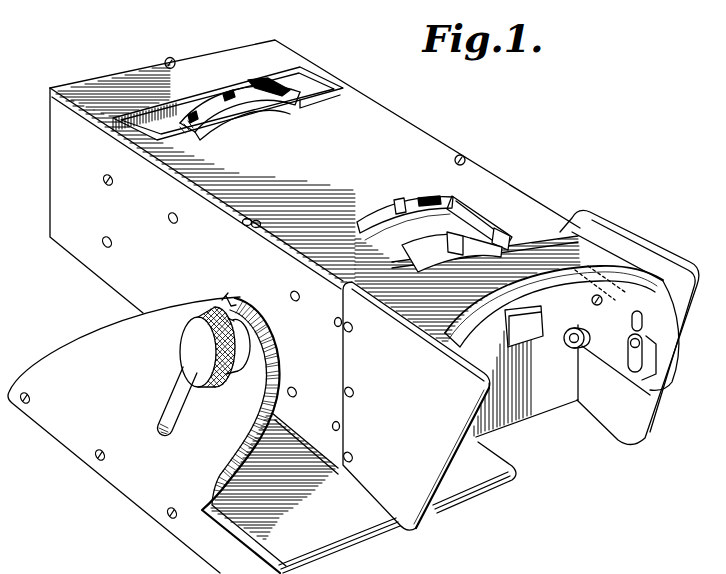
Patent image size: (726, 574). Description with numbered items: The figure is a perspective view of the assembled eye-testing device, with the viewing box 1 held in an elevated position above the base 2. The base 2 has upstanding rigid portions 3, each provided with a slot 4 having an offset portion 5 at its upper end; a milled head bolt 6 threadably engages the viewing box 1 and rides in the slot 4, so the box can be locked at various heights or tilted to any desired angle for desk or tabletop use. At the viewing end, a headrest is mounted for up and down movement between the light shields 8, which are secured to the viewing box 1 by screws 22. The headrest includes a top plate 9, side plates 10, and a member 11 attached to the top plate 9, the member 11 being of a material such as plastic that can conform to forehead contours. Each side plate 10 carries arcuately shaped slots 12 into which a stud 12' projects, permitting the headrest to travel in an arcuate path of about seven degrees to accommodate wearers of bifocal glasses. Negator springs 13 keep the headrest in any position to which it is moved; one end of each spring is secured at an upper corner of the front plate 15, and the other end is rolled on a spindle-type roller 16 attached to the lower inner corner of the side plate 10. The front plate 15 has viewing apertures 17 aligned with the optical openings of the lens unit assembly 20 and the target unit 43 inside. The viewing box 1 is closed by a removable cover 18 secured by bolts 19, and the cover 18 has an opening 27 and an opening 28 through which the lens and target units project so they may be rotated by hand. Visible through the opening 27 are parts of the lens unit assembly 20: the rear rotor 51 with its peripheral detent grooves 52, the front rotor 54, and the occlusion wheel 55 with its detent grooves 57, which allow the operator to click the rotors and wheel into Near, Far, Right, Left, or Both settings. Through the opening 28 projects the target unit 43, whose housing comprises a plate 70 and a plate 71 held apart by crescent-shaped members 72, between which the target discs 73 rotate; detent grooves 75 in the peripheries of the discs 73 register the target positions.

The viewing box 1 is at (42, 186).
The base 2 is at (246, 540).
The upstanding rigid portions 3 is at (120, 338).
The slot 4 is at (187, 380).
The offset portion 5 is at (208, 303).
The milled head bolt 6 is at (190, 336).
The light shields 8 is at (440, 512).
The top plate 9 is at (612, 248).
The side plates 10 is at (662, 362).
The member 11 is at (652, 280).
The arcuately shaped slots 12 is at (671, 362).
The stud 12' is at (620, 376).
The Negator springs 13 is at (570, 347).
The front plate 15 is at (533, 410).
The spindle-type roller 16 is at (526, 374).
The viewing apertures 17 is at (530, 318).
The removable cover 18 is at (417, 143).
The bolts 19 is at (165, 62).
The lens unit assembly 20 is at (403, 241).
The screws 22 is at (351, 333).
The opening 27 is at (482, 215).
The opening 28 is at (345, 86).
The target unit 43 is at (257, 80).
The rear rotor 51 is at (418, 270).
The peripheral detent grooves 52 is at (508, 228).
The front rotor 54 is at (432, 199).
The occlusion wheel 55 is at (372, 220).
The detent grooves 57 is at (398, 200).
The plate 70 is at (312, 99).
The plate 71 is at (283, 80).
The crescent-shaped members 72 is at (308, 92).
The target discs 73 is at (192, 105).
The detent grooves 75 is at (212, 90).